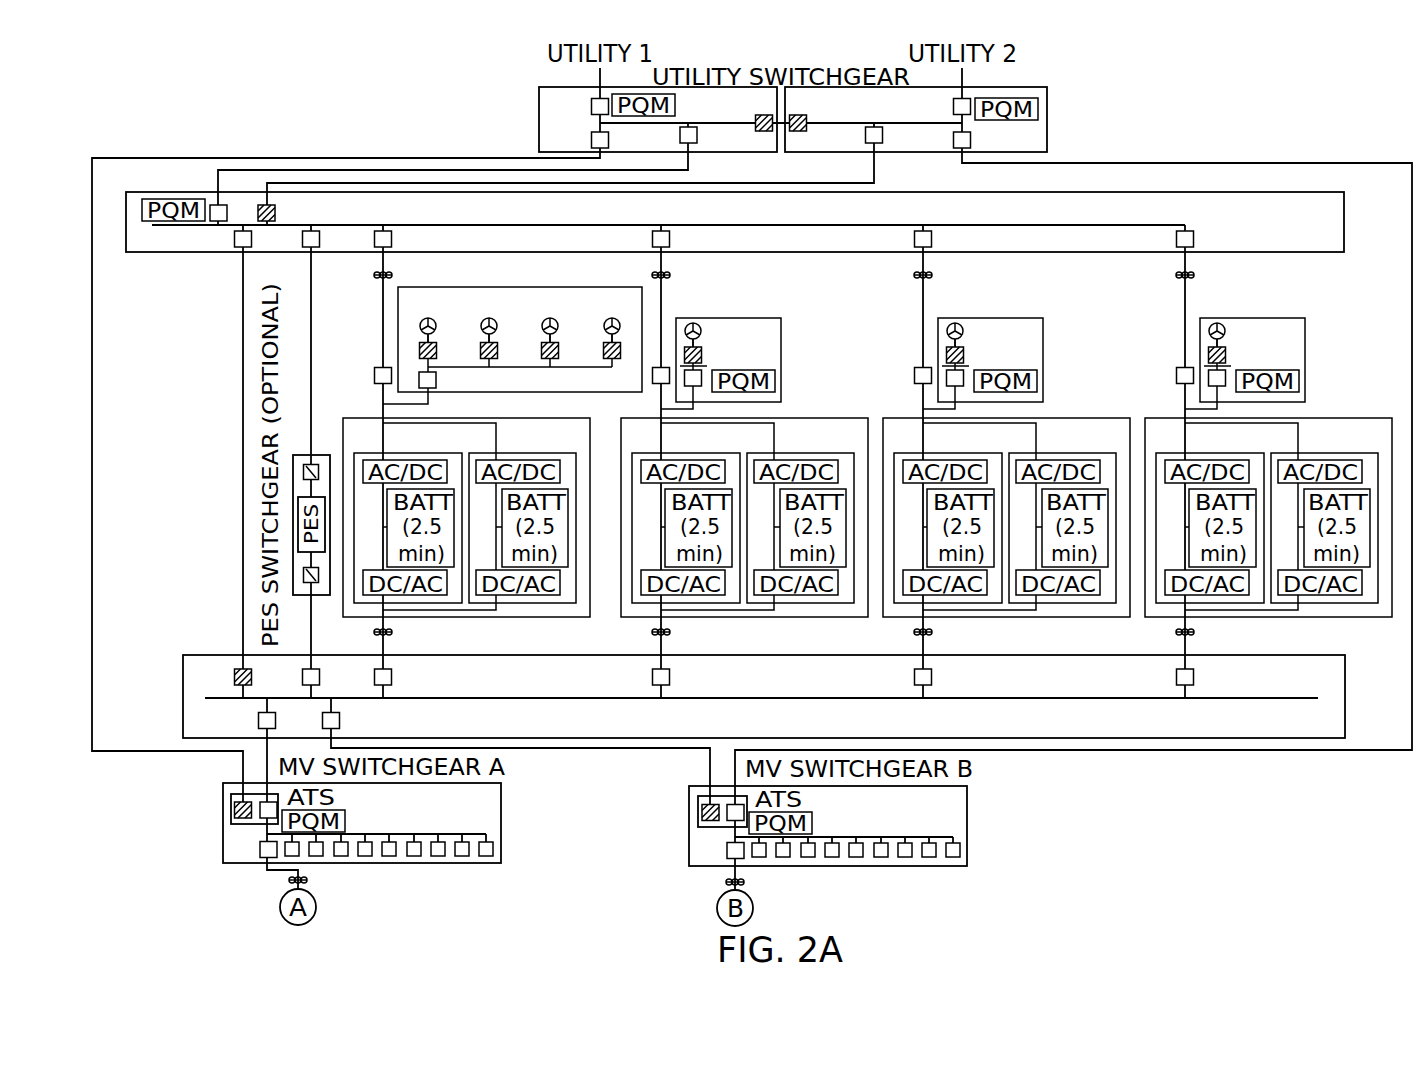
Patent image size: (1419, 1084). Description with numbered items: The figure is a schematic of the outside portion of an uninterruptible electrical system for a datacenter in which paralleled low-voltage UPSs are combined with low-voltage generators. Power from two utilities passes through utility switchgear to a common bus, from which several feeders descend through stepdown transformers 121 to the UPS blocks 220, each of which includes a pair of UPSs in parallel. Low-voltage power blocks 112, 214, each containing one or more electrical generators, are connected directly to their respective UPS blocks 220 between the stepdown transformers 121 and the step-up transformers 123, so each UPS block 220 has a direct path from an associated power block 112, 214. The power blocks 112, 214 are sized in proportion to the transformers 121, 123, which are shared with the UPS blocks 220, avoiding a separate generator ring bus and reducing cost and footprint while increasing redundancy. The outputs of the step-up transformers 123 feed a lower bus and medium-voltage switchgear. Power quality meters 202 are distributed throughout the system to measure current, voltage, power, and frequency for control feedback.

The power quality meter 202 is at (176, 198).
The LV power block 214 is at (410, 286).
The stepdown transformer 121 is at (375, 275).
The LV power block 112 is at (740, 318).
The UPS block 220 is at (355, 412).
The step-up transformer 123 is at (395, 633).